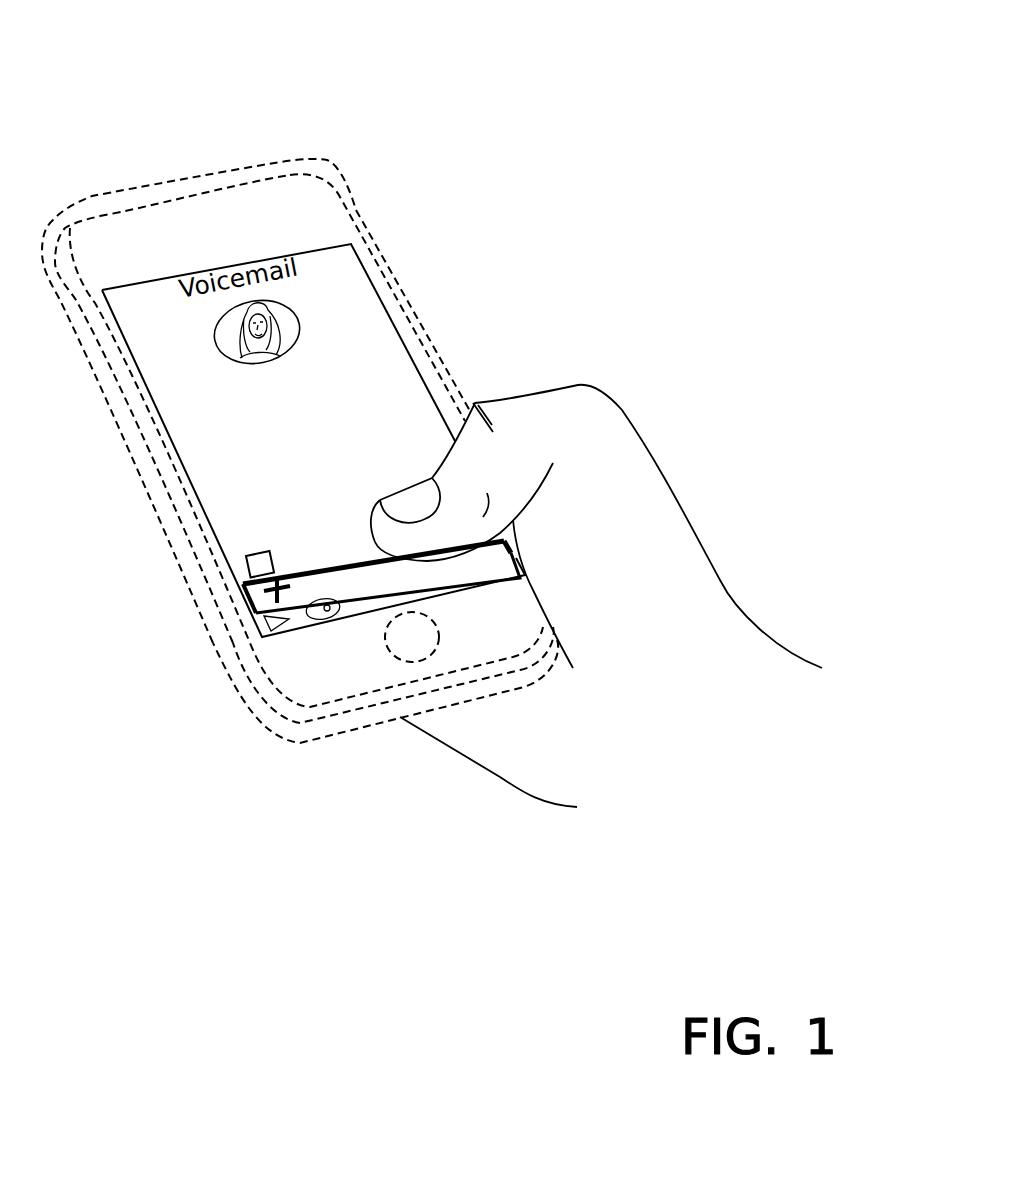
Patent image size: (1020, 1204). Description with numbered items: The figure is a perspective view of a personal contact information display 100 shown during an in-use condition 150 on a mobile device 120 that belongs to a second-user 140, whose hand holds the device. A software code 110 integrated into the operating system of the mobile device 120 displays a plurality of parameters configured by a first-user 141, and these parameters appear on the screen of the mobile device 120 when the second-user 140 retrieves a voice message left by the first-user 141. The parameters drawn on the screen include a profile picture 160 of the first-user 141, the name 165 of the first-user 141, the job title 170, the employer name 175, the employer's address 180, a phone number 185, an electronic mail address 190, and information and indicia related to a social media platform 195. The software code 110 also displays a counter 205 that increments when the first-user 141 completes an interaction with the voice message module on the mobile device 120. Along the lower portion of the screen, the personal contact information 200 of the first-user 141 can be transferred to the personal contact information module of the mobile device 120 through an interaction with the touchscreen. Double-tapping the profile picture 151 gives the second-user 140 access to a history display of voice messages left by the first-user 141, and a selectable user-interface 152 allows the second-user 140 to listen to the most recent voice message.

The personal contact information display 100 is at (565, 95).
The software code 110 is at (603, 124).
The mobile device 120 is at (276, 207).
The second-user 140 is at (610, 447).
The first-user 141 is at (642, 159).
The in-use condition 150 is at (682, 196).
The profile picture 151 is at (214, 333).
The selectable user-interface 152 is at (258, 630).
The profile picture 160 is at (277, 323).
The name 165 is at (287, 373).
The job title 170 is at (332, 385).
The employer name 175 is at (385, 408).
The employer's address 180 is at (203, 487).
The phone number 185 is at (220, 523).
The electronic mail address 190 is at (225, 545).
The social media platform information and indicia 195 is at (232, 573).
The personal contact information 200 is at (245, 610).
The counter 205 is at (322, 347).